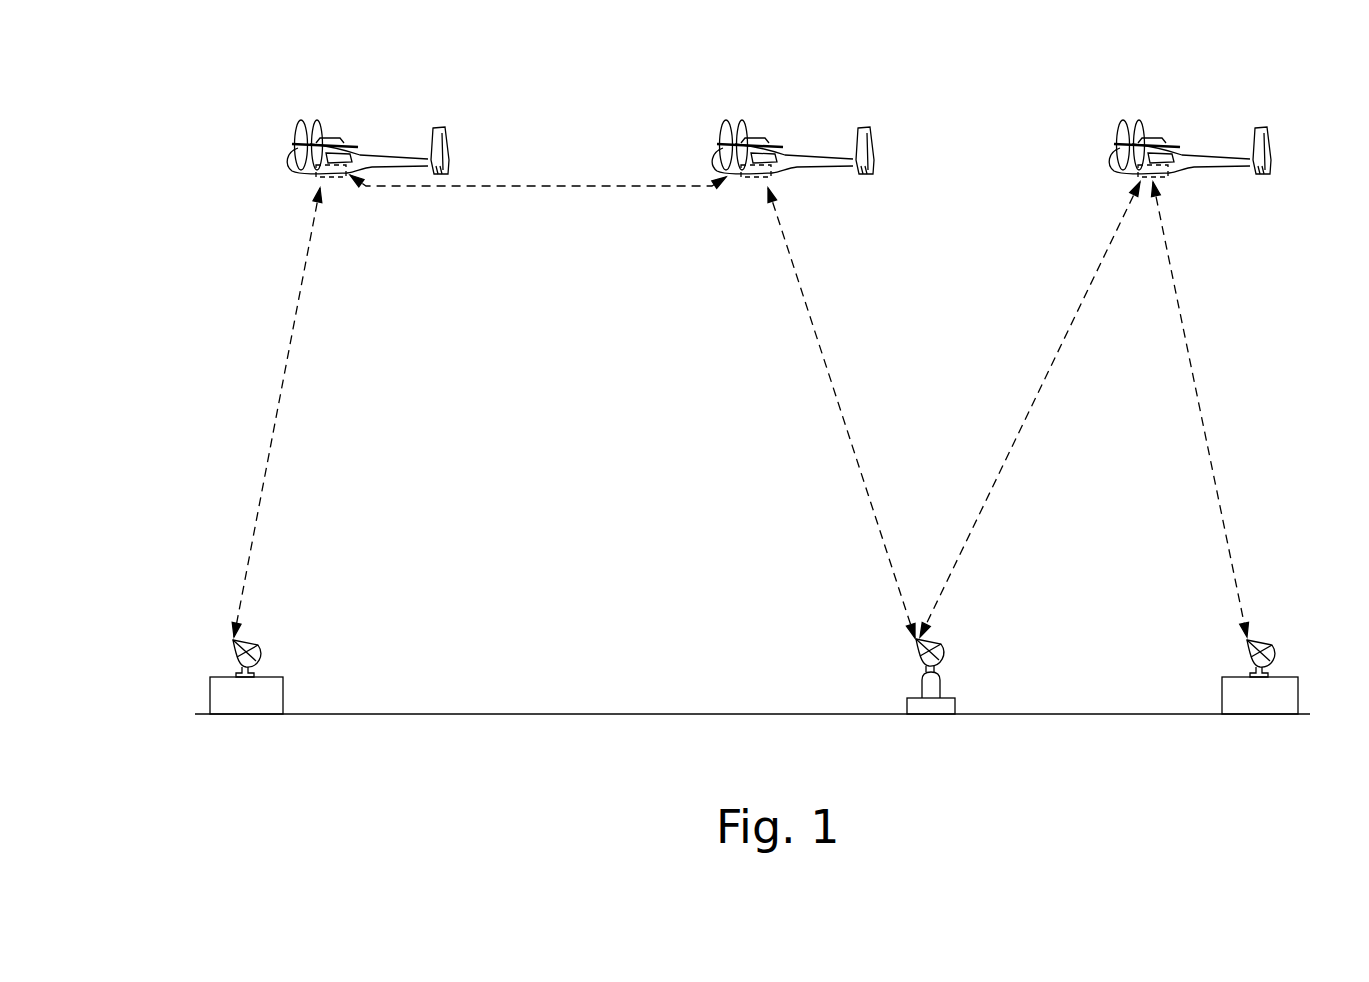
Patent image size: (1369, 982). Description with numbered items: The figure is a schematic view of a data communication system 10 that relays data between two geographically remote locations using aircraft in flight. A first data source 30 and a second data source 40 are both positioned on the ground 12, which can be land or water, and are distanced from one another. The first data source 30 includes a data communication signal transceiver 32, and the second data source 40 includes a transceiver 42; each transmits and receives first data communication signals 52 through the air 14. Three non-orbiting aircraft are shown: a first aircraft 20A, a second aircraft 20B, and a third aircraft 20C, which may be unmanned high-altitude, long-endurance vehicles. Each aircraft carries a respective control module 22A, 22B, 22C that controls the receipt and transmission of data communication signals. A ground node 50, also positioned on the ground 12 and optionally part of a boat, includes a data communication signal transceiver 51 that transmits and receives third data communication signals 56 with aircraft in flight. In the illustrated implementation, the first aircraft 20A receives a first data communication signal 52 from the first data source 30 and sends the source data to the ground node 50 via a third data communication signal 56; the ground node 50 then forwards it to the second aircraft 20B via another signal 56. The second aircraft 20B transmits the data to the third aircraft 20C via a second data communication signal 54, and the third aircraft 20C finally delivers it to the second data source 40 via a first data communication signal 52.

The data communication system 10 is at (1010, 93).
The ground 12 is at (524, 714).
The air 14 is at (698, 74).
The first aircraft 20A is at (1257, 126).
The second aircraft 20B is at (865, 126).
The third aircraft 20C is at (440, 126).
The control module 22A is at (1190, 160).
The control module 22B is at (798, 160).
The control module 22C is at (368, 160).
The first data source 30 is at (1288, 676).
The data communication signal transceiver 32 is at (1270, 645).
The second data source 40 is at (275, 676).
The transceiver 42 is at (258, 645).
The ground node 50 is at (948, 697).
The data communication signal transceiver 51 is at (941, 644).
The first data communication signals 52 is at (298, 310).
The second data communication signals 54 is at (585, 186).
The third data communication signals 56 is at (807, 313).